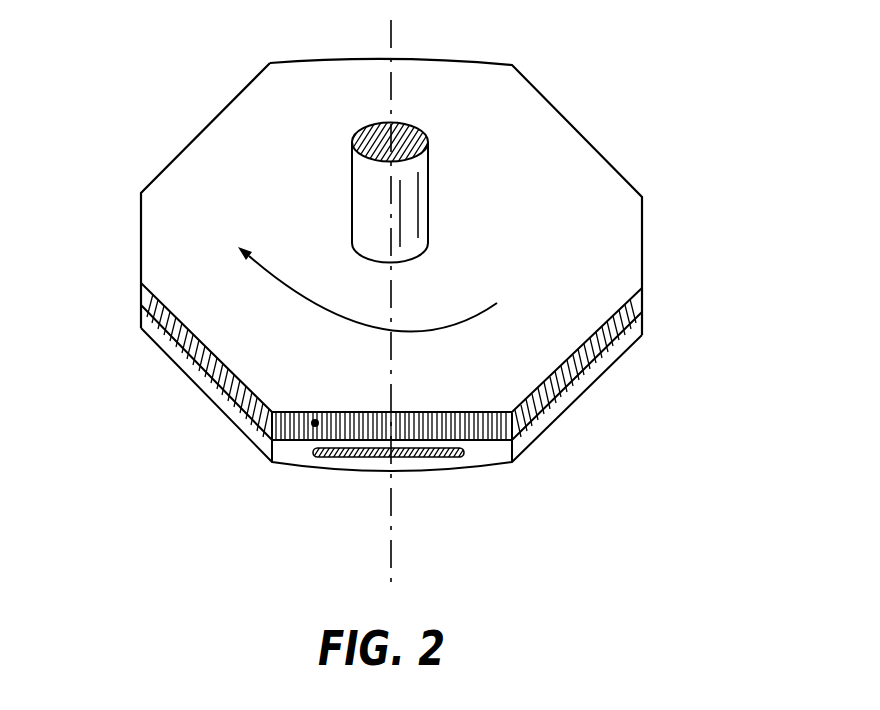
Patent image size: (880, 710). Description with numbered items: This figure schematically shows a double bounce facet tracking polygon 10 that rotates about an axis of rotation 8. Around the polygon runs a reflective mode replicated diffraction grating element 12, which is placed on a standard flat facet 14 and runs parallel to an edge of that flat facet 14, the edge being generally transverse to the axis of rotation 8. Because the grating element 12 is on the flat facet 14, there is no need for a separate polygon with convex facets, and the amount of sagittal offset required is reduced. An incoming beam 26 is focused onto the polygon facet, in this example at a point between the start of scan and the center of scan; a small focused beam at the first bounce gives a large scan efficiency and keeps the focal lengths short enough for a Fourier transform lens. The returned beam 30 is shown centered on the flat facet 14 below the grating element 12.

The axis of rotation 8 is at (391, 92).
The double bounce facet tracking polygon 10 is at (626, 138).
The reflective mode replicated diffraction grating element 12 is at (140, 223).
The flat facet 14 is at (141, 307).
The incoming beam 26 is at (315, 419).
The returned beam 30 is at (428, 457).